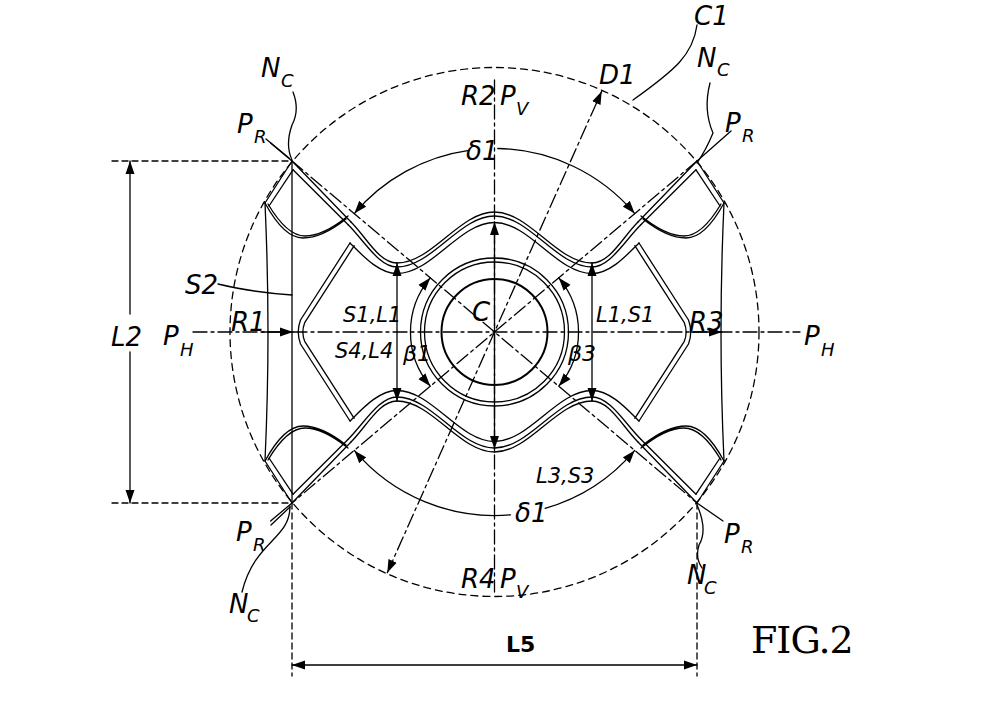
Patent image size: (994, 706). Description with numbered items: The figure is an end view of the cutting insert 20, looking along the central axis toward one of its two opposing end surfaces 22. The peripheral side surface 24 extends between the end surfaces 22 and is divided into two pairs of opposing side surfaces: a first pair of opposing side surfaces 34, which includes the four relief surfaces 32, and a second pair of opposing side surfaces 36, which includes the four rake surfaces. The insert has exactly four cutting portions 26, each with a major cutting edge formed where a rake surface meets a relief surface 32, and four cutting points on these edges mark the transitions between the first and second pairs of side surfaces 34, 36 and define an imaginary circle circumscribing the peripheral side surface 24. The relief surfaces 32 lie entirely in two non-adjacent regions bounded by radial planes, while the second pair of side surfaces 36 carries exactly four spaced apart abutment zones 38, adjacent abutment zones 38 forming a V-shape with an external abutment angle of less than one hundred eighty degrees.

The cutting insert 20 is at (506, 329).
The end surfaces 22 is at (683, 400).
The peripheral side surface 24 is at (727, 373).
The cutting portions 26 is at (298, 201).
The relief surfaces 32 is at (289, 159).
The first pair of opposing side surfaces 34 is at (264, 269).
The second pair of opposing side surfaces 36 is at (518, 212).
The abutment zones 38 is at (353, 220).